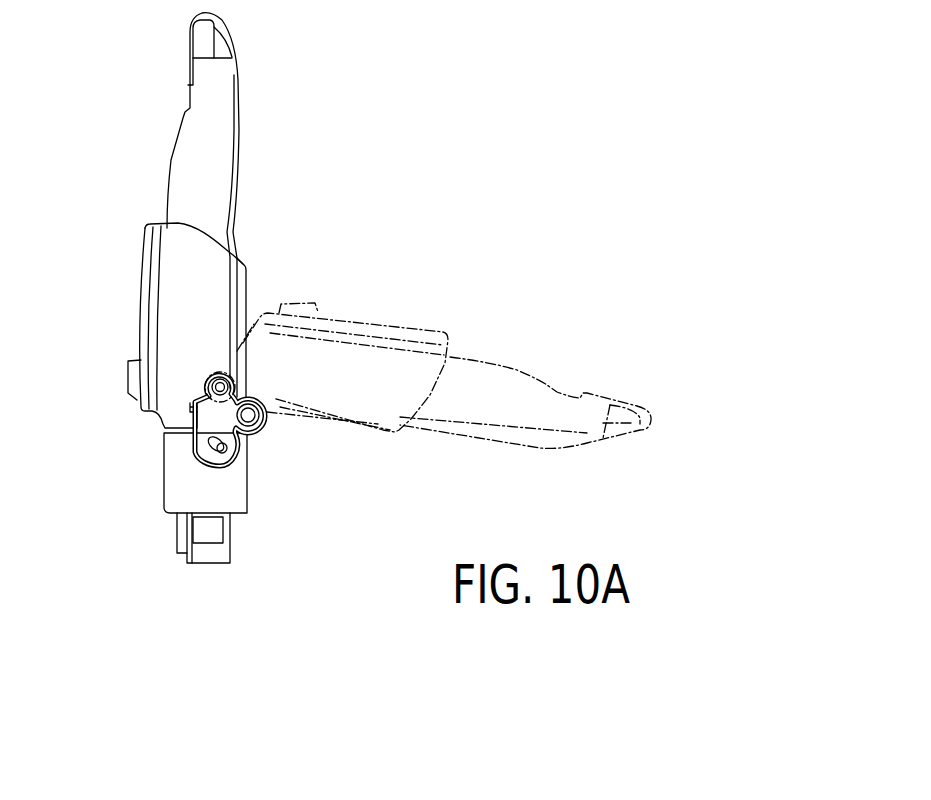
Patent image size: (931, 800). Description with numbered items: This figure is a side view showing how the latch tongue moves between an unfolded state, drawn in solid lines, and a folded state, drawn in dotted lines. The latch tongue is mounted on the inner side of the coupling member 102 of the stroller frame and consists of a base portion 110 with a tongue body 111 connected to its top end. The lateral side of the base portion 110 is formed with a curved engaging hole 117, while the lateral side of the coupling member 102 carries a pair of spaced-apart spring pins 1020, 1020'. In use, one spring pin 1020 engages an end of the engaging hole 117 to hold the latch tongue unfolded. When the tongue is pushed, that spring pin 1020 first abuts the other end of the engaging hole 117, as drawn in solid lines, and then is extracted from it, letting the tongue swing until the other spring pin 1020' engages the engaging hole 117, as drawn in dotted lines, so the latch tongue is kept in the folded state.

The tongue body 111 is at (215, 163).
The base portion 110 is at (172, 280).
The spring pin 1020' is at (136, 357).
The engaging hole 117 is at (197, 441).
The spring pin 1020 is at (140, 459).
The coupling member 102 is at (190, 487).